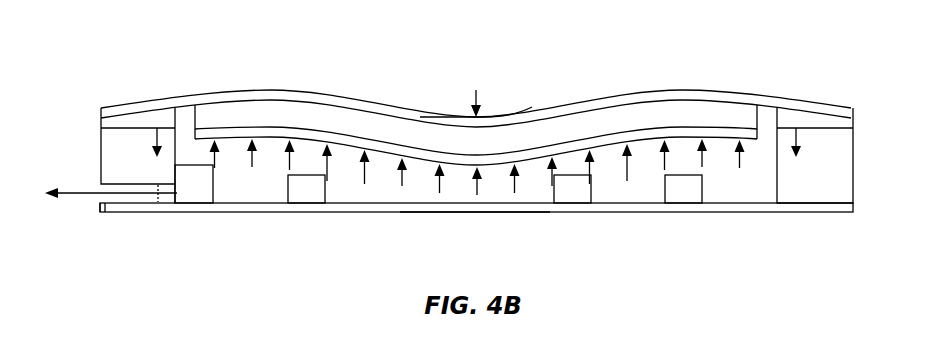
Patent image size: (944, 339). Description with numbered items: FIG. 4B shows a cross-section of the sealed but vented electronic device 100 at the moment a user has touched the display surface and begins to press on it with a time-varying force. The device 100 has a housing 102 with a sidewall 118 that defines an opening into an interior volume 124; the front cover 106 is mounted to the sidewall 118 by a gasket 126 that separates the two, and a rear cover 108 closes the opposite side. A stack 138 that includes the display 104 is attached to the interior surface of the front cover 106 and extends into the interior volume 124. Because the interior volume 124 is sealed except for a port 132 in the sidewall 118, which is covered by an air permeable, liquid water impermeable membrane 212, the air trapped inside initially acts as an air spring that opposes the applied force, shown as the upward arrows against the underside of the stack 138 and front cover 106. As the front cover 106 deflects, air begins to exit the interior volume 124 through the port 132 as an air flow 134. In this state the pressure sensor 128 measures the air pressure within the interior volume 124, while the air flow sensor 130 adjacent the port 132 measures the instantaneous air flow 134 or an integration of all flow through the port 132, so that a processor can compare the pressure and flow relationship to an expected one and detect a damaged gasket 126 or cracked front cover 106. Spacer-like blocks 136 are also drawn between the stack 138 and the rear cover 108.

The electronic device 100 is at (272, 68).
The housing 102 is at (810, 220).
The display 104 is at (703, 128).
The front cover 106 is at (592, 95).
The rear cover 108 is at (472, 213).
The sidewall 118 is at (789, 127).
The interior volume 124 is at (364, 180).
The gasket 126 is at (162, 105).
The pressure sensor 128 is at (567, 204).
The air flow sensor 130 is at (190, 204).
The port 132 is at (108, 204).
The air flow 134 is at (80, 190).
The spacer blocks 136 is at (300, 204).
The stack 138 is at (644, 92).
The membrane 212 is at (153, 201).